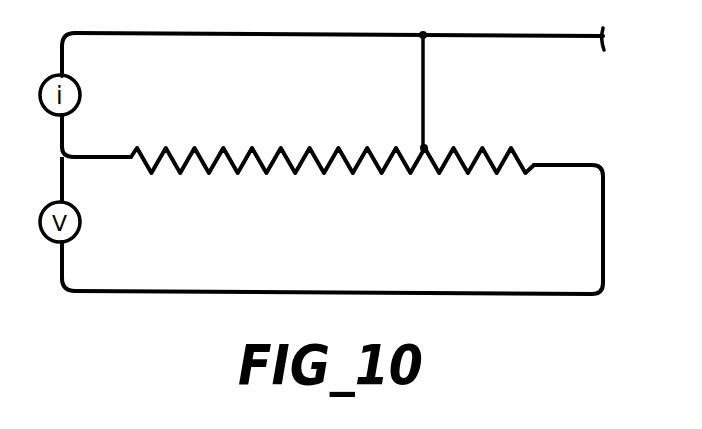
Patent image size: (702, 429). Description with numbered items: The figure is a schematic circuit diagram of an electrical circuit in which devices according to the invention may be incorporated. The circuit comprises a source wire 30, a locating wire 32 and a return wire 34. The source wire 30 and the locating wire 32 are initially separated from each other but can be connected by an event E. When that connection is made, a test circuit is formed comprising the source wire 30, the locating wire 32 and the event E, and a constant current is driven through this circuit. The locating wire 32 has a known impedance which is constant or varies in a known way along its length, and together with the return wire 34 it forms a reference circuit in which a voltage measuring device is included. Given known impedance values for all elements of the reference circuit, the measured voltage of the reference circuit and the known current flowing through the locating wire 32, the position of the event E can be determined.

The source wire 30 is at (246, 35).
The locating wire 32 is at (266, 166).
The return wire 34 is at (422, 294).
The event E is at (424, 100).